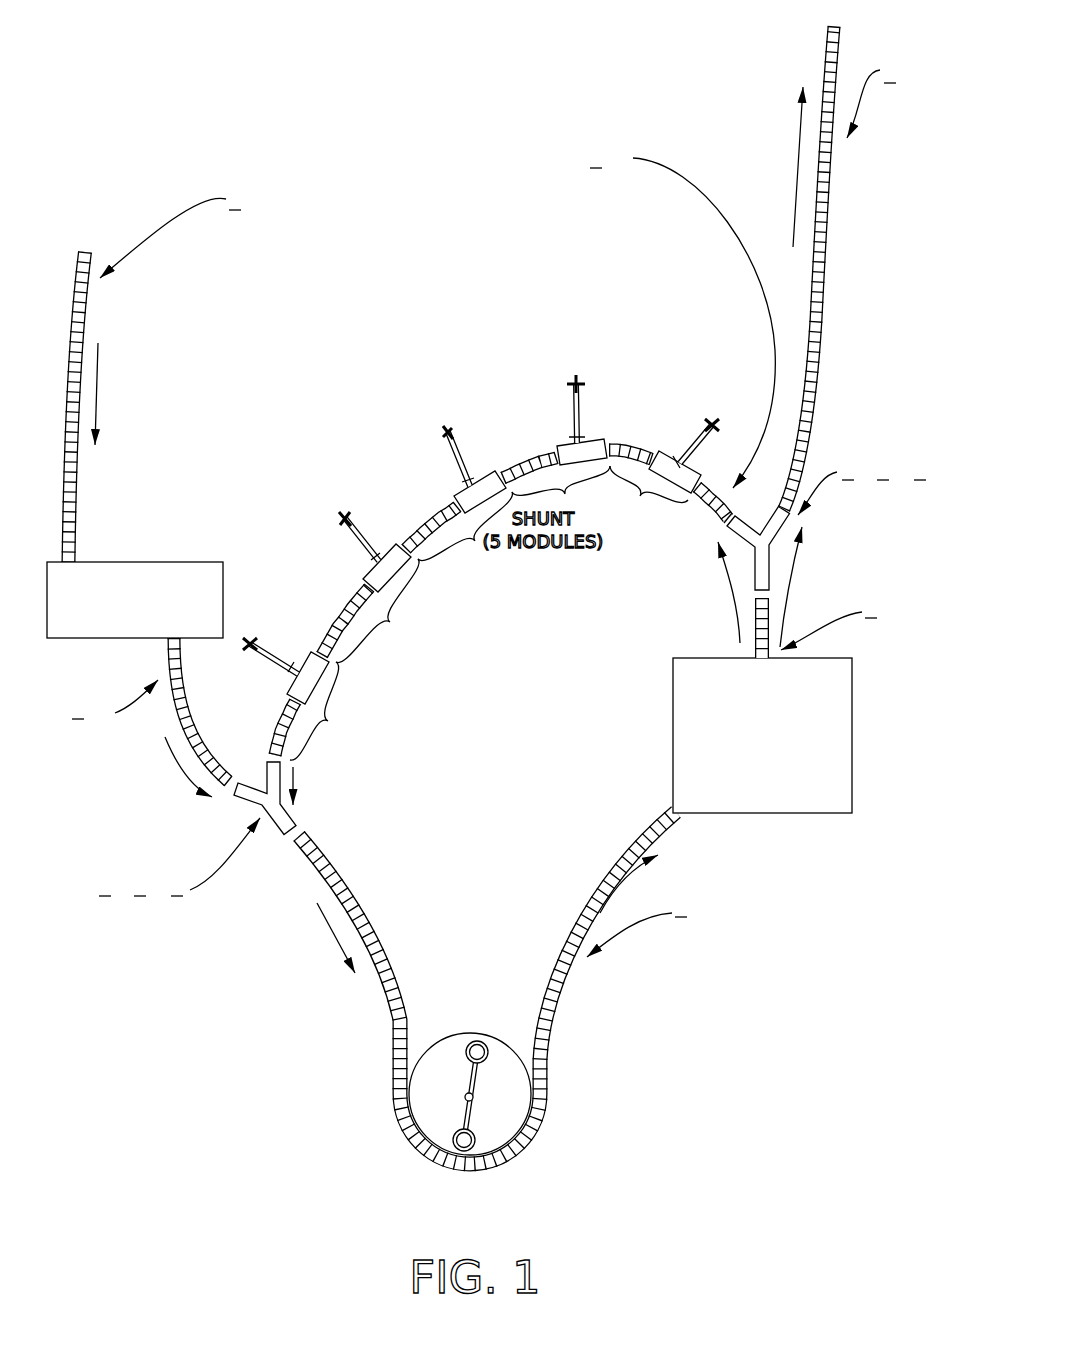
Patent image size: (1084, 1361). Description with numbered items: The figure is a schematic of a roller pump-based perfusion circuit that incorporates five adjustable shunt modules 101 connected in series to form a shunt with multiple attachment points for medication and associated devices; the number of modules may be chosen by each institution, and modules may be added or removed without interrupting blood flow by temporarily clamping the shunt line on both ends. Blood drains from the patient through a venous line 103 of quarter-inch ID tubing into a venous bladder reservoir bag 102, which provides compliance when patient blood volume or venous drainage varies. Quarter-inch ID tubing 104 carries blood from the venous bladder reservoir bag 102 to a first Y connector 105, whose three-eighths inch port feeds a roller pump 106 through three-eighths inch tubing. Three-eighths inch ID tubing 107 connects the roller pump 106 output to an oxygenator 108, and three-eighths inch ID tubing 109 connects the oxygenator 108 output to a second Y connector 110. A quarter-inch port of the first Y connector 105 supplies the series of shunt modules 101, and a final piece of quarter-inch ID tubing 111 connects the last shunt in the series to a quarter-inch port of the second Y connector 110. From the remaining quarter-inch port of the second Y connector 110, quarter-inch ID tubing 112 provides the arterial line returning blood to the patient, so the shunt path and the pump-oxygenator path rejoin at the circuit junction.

The adjustable shunt modules 101 is at (634, 504).
The venous bladder reservoir bag 102 is at (173, 562).
The venous line 103 is at (183, 400).
The 1/4 inch ID tubing 104 is at (155, 745).
The first Y connector 105 is at (265, 837).
The roller pump 106 is at (490, 1120).
The ⅜" ID tubing 107 is at (582, 1003).
The oxygenator 108 is at (743, 780).
The ⅜" ID tubing 109 is at (800, 618).
The second Y connector 110 is at (822, 467).
The ¼" ID tubing 111 is at (718, 487).
The ¼" ID tubing 112 is at (841, 219).